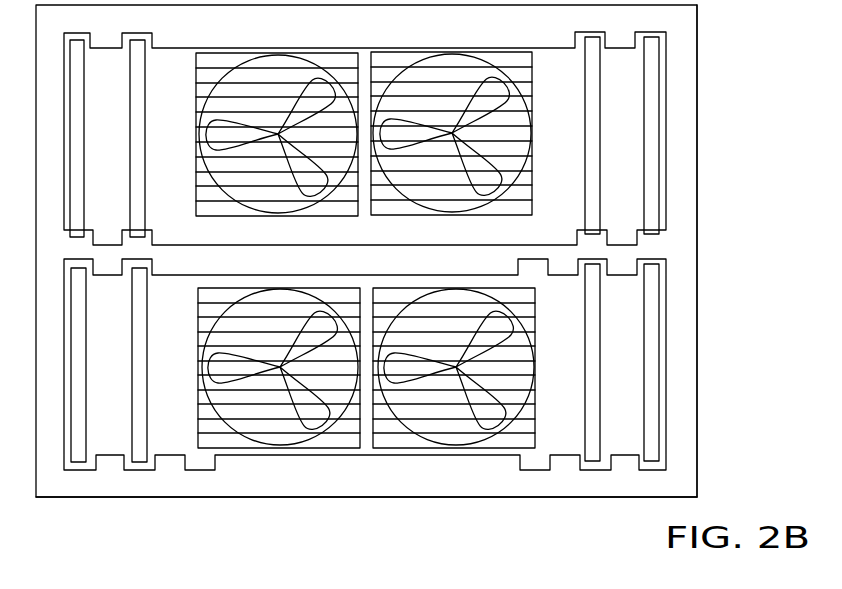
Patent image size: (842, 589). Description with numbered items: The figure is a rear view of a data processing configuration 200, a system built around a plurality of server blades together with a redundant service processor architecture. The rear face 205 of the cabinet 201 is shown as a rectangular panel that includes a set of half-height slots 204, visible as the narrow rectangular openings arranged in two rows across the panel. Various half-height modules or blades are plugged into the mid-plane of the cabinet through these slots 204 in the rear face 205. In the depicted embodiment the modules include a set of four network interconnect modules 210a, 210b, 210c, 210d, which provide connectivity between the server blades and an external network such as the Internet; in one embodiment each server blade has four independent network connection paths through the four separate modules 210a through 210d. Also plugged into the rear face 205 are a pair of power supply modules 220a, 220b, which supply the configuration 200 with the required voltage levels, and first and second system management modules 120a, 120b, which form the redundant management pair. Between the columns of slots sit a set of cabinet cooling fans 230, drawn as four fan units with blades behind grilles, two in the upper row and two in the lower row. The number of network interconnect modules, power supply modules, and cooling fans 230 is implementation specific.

The data processing configuration 200 is at (750, 152).
The cabinet 201 is at (697, 297).
The half-height slots 204 is at (98, 39).
The rear face 205 is at (690, 493).
The network interconnect module 210a is at (137, 123).
The network interconnect module 210b is at (166, 311).
The network interconnect module 210c is at (592, 105).
The network interconnect module 210d is at (592, 322).
The power supply module 220a is at (80, 123).
The power supply module 220b is at (80, 327).
The first system management module 120a is at (651, 105).
The second system management module 120b is at (651, 323).
The cabinet cooling fans 230 is at (392, 210).